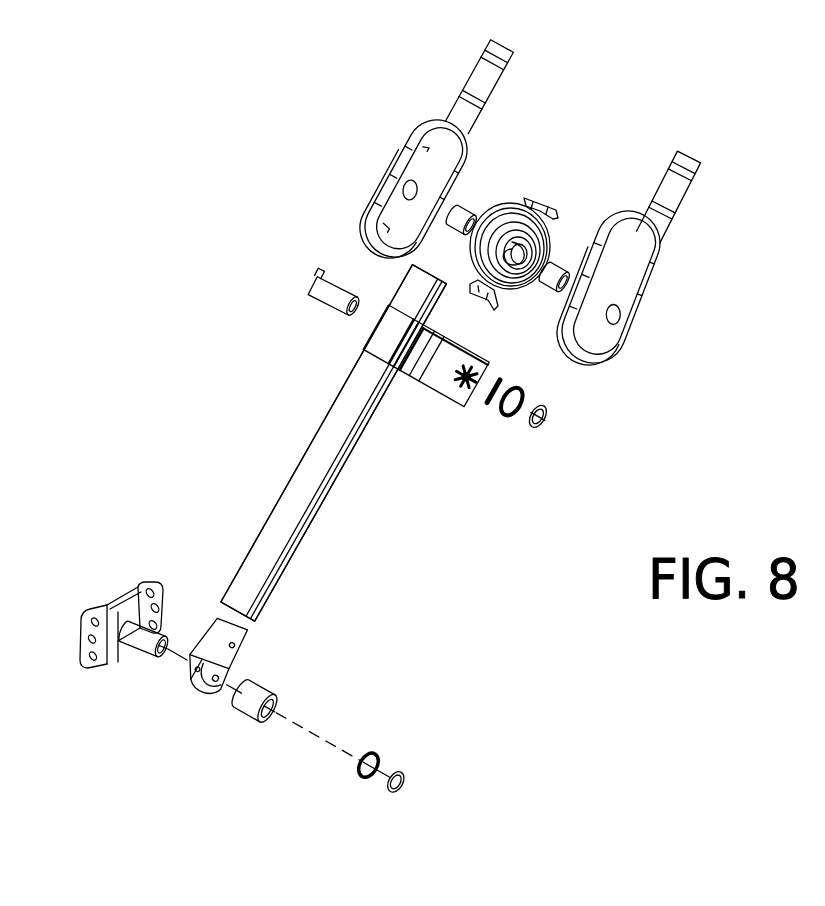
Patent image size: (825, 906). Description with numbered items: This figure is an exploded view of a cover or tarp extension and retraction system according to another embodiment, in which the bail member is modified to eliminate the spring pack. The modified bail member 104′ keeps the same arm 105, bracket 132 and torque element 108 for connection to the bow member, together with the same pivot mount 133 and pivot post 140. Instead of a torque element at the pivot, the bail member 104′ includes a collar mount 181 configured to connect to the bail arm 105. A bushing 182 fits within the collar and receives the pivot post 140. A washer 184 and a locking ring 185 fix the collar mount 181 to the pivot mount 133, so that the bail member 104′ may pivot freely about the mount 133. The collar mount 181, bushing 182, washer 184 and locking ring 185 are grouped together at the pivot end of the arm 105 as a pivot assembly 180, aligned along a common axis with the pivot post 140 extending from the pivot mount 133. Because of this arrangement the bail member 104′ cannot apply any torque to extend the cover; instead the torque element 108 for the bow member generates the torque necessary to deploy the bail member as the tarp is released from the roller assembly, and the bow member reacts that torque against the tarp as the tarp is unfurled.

The modified bail member 104′ is at (278, 300).
The arm 105 is at (336, 475).
The torque element 108 is at (531, 188).
The bracket 132 is at (418, 367).
The pivot mount 133 is at (153, 580).
The pivot post 140 is at (160, 630).
The pivot assembly 180 is at (270, 759).
The collar mount 181 is at (240, 637).
The bushing 182 is at (257, 690).
The washer 184 is at (377, 747).
The locking ring 185 is at (398, 767).